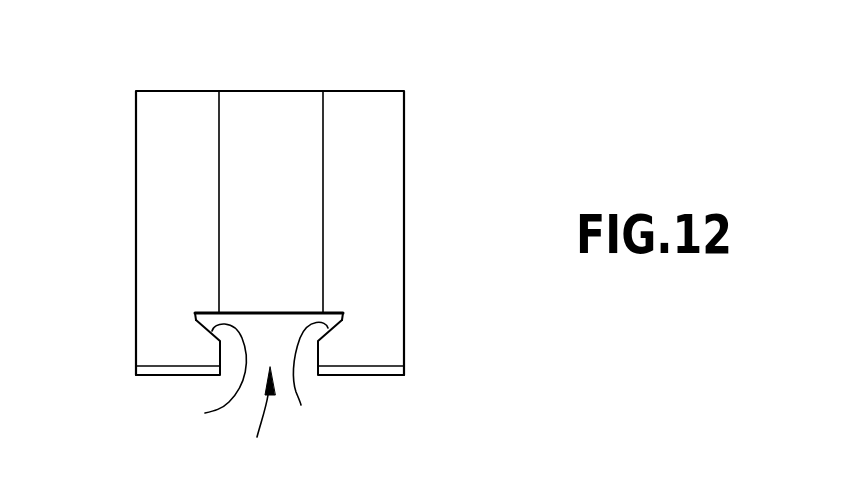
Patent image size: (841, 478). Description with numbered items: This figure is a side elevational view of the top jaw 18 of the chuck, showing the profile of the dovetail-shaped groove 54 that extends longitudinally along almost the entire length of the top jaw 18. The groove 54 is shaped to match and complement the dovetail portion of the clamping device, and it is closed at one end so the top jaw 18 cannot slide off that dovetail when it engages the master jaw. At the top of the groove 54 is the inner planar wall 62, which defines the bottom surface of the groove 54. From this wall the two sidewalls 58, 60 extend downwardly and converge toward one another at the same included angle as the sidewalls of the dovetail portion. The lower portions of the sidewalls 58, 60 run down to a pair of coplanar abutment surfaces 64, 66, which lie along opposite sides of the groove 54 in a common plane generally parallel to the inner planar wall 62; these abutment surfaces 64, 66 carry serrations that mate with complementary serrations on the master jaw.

The top jaw 18 is at (302, 91).
The groove 54 is at (249, 413).
The sidewall of groove 58 is at (208, 378).
The sidewall of groove 60 is at (310, 381).
The inner planar wall 62 is at (273, 312).
The abutment surface 64 is at (155, 376).
The abutment surface 66 is at (360, 370).